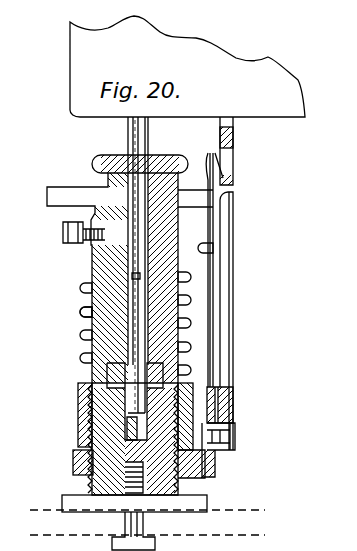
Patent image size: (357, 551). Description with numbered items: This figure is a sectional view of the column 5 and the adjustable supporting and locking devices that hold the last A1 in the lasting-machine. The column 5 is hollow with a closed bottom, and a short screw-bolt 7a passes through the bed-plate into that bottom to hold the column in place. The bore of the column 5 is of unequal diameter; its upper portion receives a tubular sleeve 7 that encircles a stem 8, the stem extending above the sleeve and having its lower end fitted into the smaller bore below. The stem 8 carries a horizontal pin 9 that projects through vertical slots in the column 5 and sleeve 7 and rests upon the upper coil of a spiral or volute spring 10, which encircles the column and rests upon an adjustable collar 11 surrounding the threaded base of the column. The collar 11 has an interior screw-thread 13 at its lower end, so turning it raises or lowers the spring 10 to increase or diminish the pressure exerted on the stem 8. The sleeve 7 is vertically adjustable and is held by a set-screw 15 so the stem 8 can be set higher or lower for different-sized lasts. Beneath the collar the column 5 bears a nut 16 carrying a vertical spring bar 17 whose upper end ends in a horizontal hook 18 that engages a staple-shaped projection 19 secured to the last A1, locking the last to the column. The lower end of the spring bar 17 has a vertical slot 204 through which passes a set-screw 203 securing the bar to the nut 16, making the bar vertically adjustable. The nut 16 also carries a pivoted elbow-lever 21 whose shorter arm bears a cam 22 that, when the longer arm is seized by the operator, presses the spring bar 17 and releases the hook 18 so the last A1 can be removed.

The last A1 is at (187, 66).
The stem 8 is at (130, 151).
The tubular sleeve 7 is at (108, 176).
The column 5 is at (130, 278).
The set-screw 15 is at (63, 232).
The horizontal pin 9 is at (132, 276).
The spiral or volute spring 10 is at (84, 312).
The adjustable collar 11 is at (78, 410).
The interior screw-thread 13 is at (80, 433).
The nut 16 is at (73, 462).
The screw-bolt 7a is at (126, 527).
The horizontal hook 18 is at (210, 165).
The staple-shaped projection 19 is at (233, 148).
The cam 22 is at (204, 248).
The vertical spring bar 17 is at (212, 310).
The pivoted elbow-lever 21 is at (233, 355).
The set-screw 203 is at (235, 438).
The vertical slot 204 is at (216, 460).